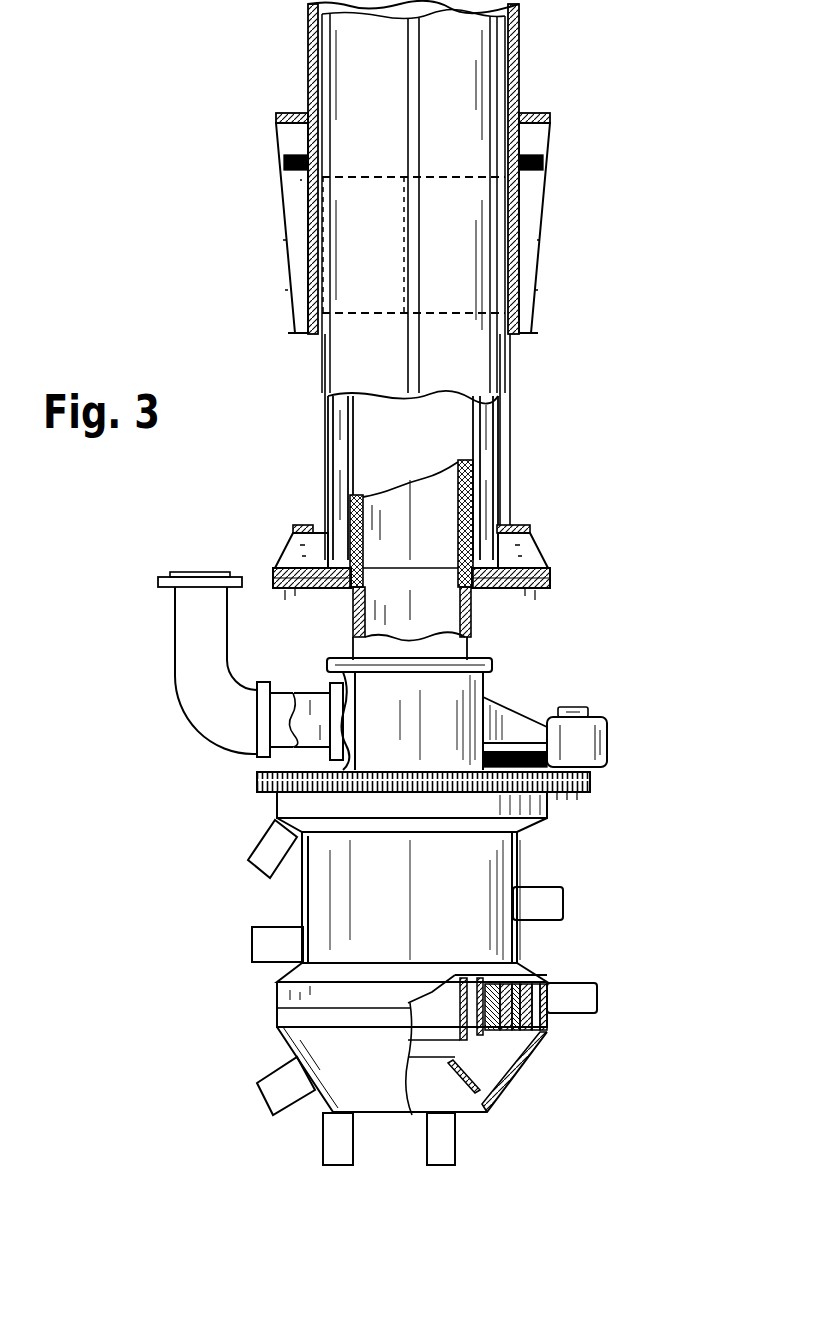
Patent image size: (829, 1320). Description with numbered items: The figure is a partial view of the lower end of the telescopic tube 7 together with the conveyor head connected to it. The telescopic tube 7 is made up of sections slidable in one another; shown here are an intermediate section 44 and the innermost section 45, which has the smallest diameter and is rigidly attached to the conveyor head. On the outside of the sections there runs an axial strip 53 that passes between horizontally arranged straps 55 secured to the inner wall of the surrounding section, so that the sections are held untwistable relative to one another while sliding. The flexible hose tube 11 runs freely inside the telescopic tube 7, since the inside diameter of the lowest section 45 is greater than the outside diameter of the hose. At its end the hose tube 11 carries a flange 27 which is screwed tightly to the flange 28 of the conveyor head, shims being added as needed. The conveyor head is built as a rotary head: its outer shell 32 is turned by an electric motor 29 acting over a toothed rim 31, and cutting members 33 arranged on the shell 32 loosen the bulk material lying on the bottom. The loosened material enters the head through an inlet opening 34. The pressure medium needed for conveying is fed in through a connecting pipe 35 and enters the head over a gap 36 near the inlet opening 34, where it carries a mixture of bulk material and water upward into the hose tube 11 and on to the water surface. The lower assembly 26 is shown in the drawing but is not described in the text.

The telescopic tube 7 is at (593, 150).
The hose tube 11 is at (477, 483).
The lower housing assembly 26 is at (278, 1003).
The flange 27 is at (482, 560).
The flange 28 is at (497, 593).
The electric motor 29 is at (597, 738).
The toothed rim 31 is at (257, 782).
The outer shell 32 is at (483, 866).
The cutting members 33 is at (263, 938).
The inlet opening 34 is at (450, 1120).
The connecting pipe 35 is at (190, 631).
The gap 36 is at (480, 1088).
The intermediate section 44 is at (310, 60).
The innermost section 45 is at (325, 450).
The strip 53 is at (410, 358).
The strap 55 is at (325, 267).